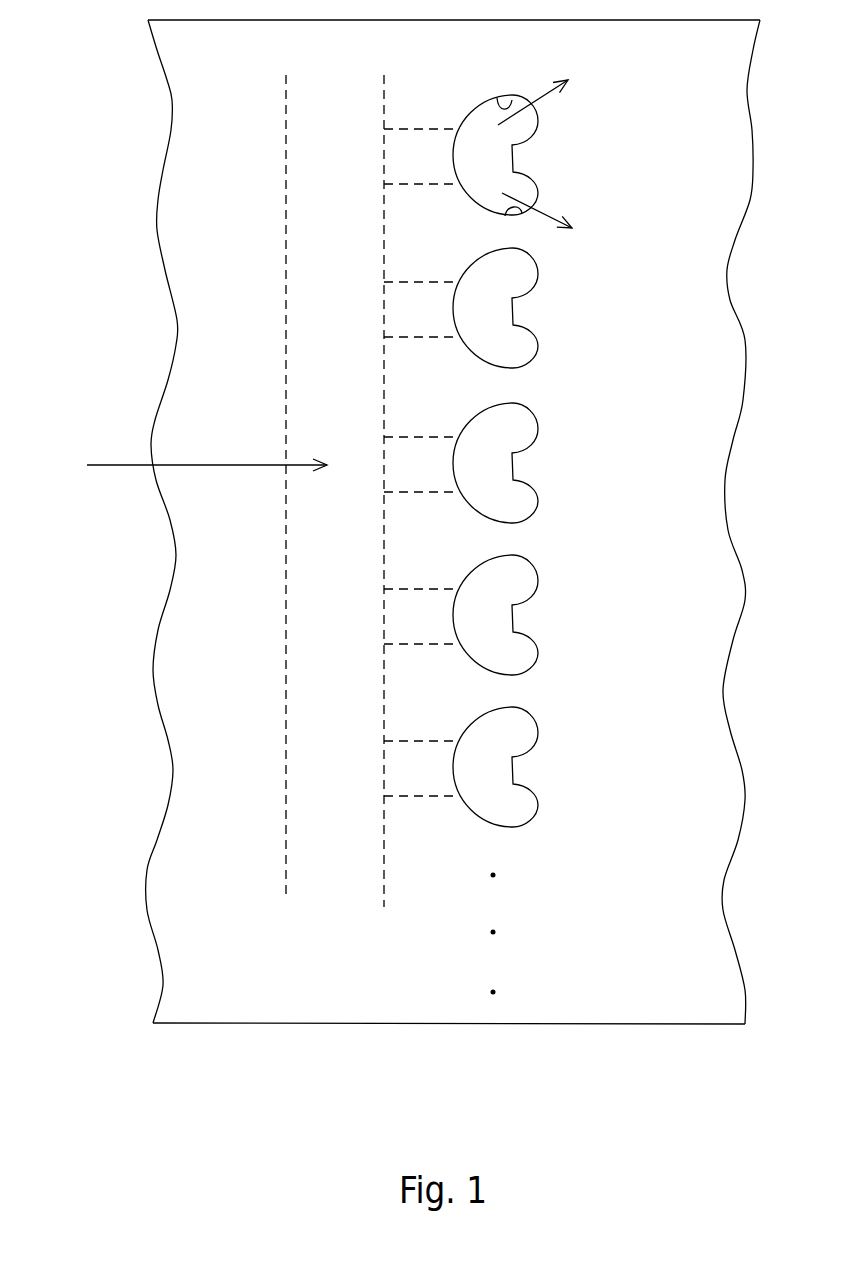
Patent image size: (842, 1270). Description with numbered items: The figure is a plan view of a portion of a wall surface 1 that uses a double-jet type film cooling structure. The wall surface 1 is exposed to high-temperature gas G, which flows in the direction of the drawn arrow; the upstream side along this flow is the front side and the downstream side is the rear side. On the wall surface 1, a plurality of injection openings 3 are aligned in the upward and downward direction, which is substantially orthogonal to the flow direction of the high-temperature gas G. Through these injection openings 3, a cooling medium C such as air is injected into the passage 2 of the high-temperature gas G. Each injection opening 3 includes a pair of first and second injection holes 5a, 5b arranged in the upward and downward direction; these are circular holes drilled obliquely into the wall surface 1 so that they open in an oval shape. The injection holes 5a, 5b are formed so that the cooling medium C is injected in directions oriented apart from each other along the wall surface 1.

The wall surface 1 is at (183, 80).
The passage 2 is at (65, 929).
The injection opening 3 is at (468, 155).
The first injection hole 5a is at (497, 103).
The second injection hole 5b is at (525, 217).
The cooling medium C is at (533, 103).
The high-temperature gas G is at (212, 466).